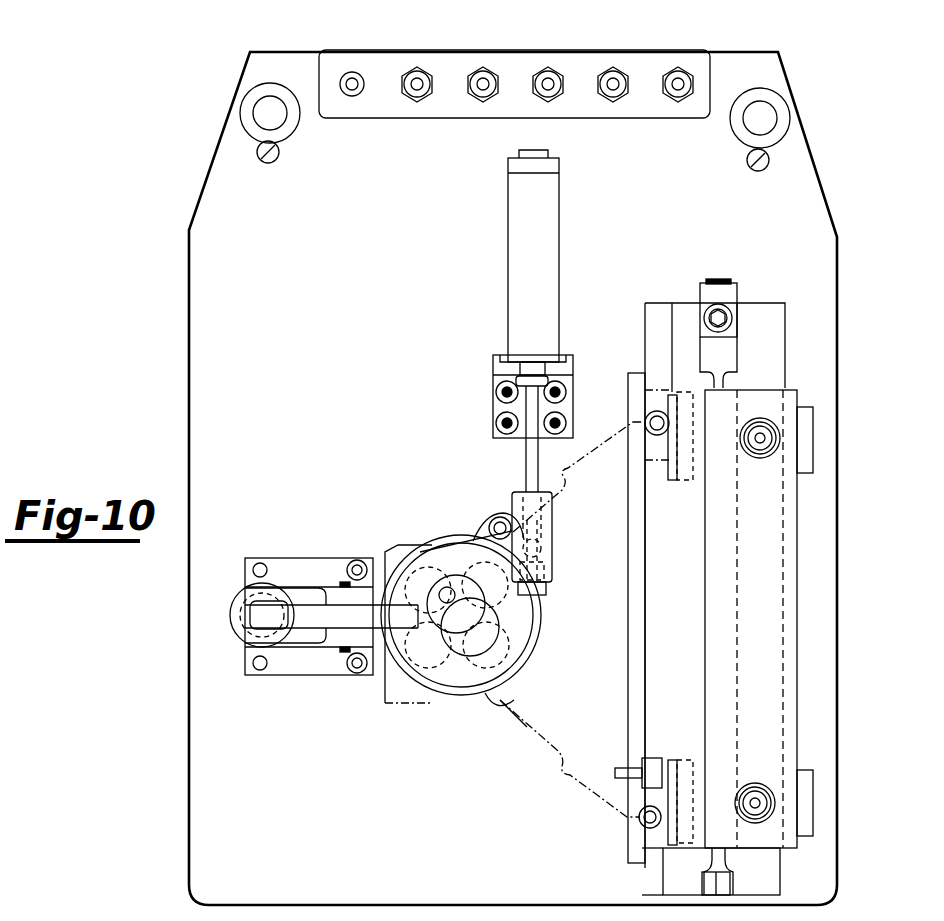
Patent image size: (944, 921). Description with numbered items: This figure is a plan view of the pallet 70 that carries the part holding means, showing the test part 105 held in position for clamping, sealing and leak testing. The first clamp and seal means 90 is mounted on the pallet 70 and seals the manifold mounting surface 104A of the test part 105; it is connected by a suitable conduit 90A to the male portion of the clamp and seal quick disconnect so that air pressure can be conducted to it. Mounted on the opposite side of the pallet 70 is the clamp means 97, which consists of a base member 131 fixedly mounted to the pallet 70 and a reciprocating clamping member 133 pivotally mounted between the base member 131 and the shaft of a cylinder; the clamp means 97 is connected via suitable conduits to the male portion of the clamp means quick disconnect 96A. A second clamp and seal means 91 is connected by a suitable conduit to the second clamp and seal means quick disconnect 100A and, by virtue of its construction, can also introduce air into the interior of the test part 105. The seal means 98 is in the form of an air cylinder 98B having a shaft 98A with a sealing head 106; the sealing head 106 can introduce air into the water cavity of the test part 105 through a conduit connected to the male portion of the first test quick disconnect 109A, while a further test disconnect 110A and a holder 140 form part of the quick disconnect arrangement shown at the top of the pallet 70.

The pallet 70 is at (313, 831).
The connector panel 140 is at (360, 118).
The conduit 90A is at (420, 66).
The clamp means quick disconnect 96A is at (486, 66).
The second clamp and seal means quick disconnect 100A is at (550, 66).
The first test quick disconnect 109A is at (616, 66).
The connector E 110A is at (683, 66).
The seal means 98 is at (505, 294).
The air cylinder 98B is at (520, 195).
The shaft 98A is at (526, 453).
The sealing head 106 is at (549, 540).
The second clamp and seal means 91 is at (418, 540).
The test part 105 is at (540, 695).
The base member 131 is at (286, 558).
The reciprocating clamping member 133 is at (332, 608).
The clamp means 97 is at (232, 624).
The first clamp and seal means 90 is at (689, 568).
The manifold mounting surface 104A is at (668, 750).